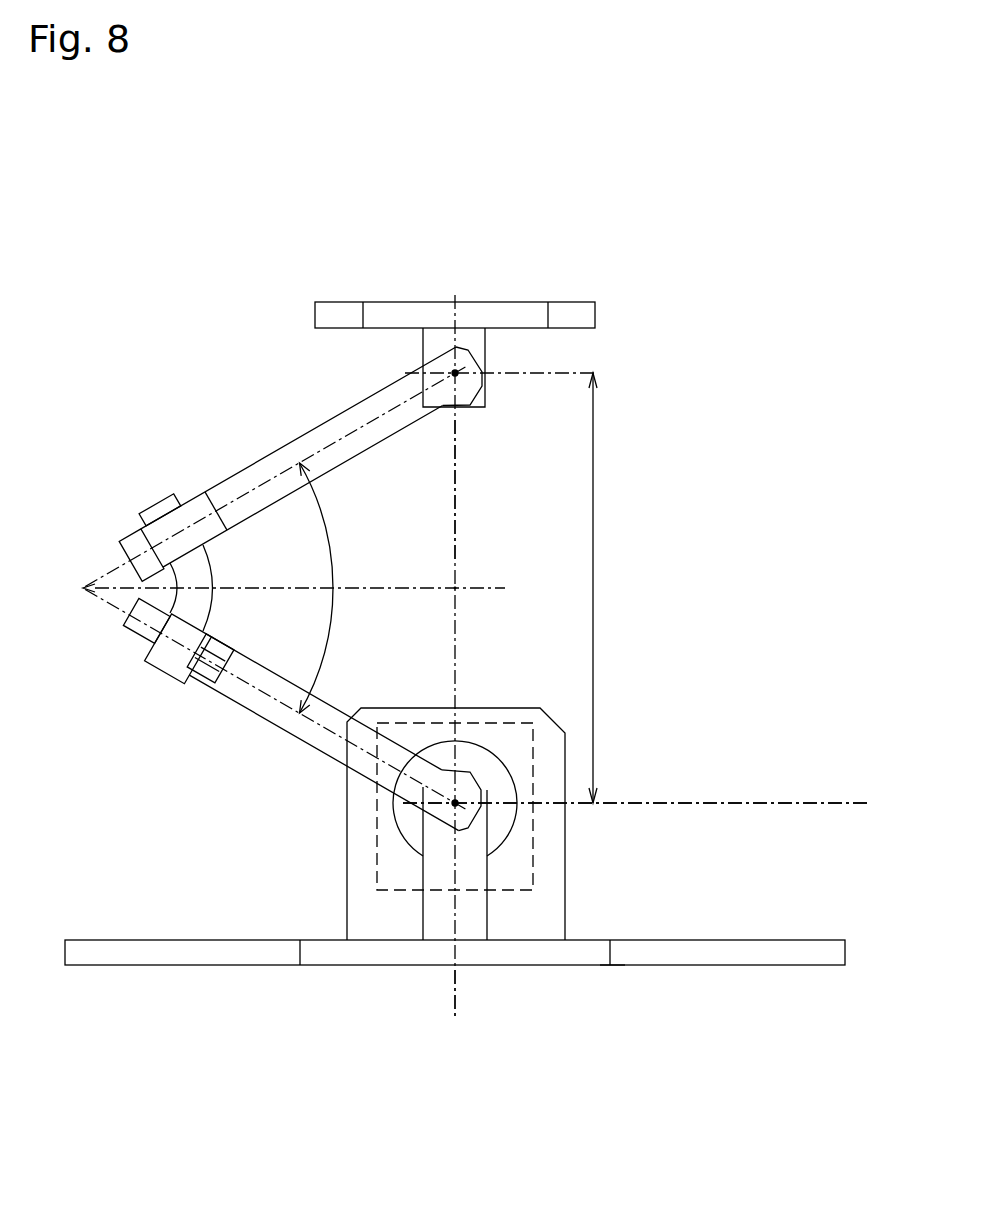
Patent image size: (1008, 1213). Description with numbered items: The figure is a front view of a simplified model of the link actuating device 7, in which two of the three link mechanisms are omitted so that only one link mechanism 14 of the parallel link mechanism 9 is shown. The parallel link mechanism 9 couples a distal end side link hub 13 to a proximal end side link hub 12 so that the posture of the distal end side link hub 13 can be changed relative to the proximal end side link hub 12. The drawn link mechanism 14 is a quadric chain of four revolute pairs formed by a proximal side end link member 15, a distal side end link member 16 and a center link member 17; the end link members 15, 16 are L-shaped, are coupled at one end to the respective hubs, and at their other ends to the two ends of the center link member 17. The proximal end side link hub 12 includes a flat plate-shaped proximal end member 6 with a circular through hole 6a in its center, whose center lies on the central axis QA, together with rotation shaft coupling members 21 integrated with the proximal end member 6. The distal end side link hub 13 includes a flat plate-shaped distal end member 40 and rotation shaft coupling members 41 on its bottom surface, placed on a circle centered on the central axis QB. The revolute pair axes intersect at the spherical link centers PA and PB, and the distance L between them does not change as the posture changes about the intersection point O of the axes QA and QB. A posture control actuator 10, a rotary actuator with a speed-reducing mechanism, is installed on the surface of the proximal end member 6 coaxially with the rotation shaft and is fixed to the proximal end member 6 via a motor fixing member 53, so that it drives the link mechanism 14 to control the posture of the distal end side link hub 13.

The link actuating device 7 is at (705, 172).
The parallel link mechanism 9 is at (220, 447).
The distal side end link member 16 is at (300, 438).
The center link member 17 is at (205, 578).
The link mechanism 14 is at (325, 690).
The proximal side end link member 15 is at (300, 742).
The distal end side link hub 13 is at (704, 332).
The distal end member 40 is at (567, 317).
The rotation shaft coupling member 41 is at (482, 350).
The posture control actuator 10 is at (487, 722).
The motor fixing member 53 is at (567, 895).
The proximal end side link hub 12 is at (340, 1108).
The proximal end member 6 is at (256, 966).
The through hole 6a is at (613, 962).
The rotation shaft coupling member 21 is at (438, 908).